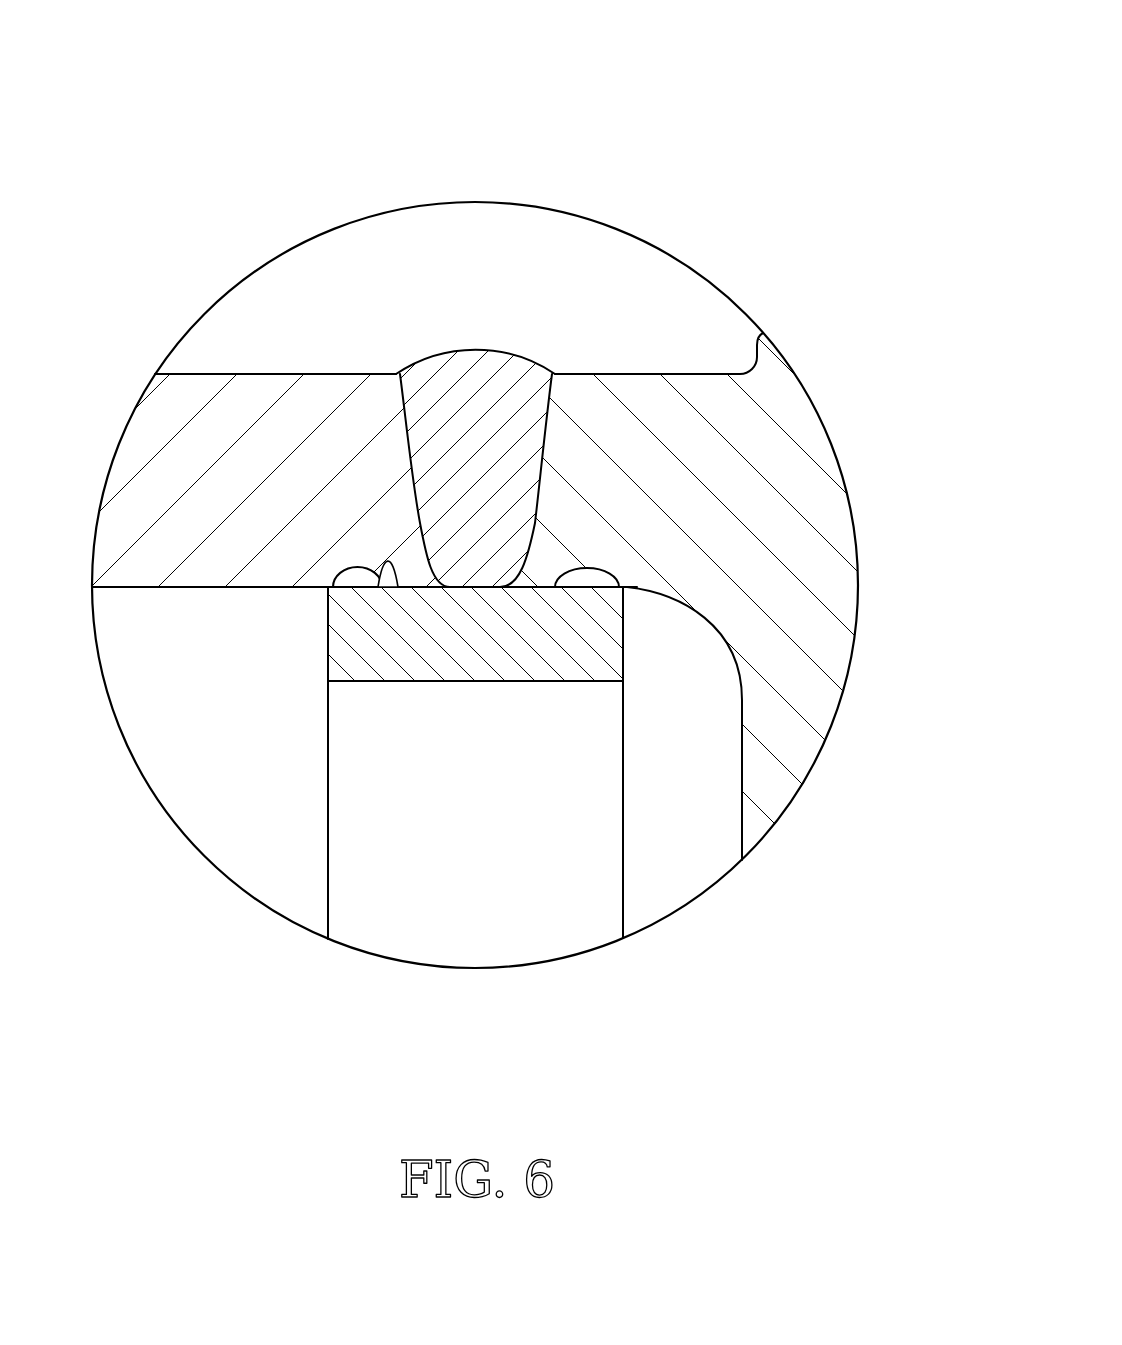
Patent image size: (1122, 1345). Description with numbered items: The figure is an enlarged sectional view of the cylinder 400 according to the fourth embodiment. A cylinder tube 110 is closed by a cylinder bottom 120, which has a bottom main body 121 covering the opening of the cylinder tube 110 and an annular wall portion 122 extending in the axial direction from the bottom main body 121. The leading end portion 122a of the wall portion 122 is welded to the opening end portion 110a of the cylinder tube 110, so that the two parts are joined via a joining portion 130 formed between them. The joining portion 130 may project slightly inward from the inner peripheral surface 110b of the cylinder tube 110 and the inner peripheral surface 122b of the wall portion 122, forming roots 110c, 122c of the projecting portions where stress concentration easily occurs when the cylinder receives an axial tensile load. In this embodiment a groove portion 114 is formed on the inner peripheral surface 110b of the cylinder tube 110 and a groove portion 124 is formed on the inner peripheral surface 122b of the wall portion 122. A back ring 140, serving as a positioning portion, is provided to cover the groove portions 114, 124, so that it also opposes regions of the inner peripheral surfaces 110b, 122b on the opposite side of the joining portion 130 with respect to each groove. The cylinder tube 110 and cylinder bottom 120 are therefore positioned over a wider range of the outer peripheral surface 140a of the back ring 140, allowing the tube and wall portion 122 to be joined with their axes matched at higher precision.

The cylinder 400 is at (653, 410).
The cylinder tube 110 is at (216, 372).
The opening end portion 110a is at (407, 420).
The inner peripheral surface 110b is at (298, 587).
The root 110c is at (445, 587).
The groove portion 114 is at (349, 580).
The cylinder bottom 120 is at (724, 372).
The bottom main body 121 is at (797, 782).
The wall portion 122 is at (713, 322).
The leading end portion 122a is at (547, 418).
The inner peripheral surface 122b is at (627, 590).
The root 122c is at (527, 567).
The groove portion 124 is at (600, 582).
The joining portion 130 is at (467, 353).
The back ring 140 is at (442, 658).
The outer peripheral surface 140a is at (378, 587).